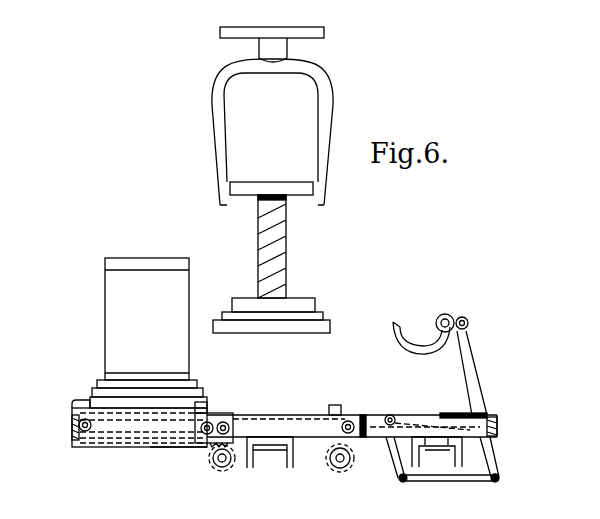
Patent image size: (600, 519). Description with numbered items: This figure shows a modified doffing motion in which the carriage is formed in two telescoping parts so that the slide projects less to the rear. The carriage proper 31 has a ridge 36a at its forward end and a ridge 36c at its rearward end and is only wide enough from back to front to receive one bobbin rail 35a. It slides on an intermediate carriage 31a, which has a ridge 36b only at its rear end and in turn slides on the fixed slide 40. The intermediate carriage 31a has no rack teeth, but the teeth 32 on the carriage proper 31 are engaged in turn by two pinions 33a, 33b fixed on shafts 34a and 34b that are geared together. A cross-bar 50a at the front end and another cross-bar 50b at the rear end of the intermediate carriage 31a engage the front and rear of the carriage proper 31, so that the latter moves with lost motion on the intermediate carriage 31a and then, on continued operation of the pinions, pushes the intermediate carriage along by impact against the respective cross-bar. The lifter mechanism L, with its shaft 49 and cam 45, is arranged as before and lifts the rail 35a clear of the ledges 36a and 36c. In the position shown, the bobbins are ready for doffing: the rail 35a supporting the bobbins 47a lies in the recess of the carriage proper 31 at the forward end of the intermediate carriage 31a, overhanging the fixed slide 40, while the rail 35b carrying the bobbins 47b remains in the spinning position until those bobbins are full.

The bobbins 47a is at (137, 323).
The bobbins 47b is at (278, 248).
The bobbin rail 35a is at (147, 403).
The rail 35b is at (323, 327).
The ridge 36a is at (80, 402).
The ridge 36b is at (329, 410).
The ridge 36c is at (207, 405).
The carriage proper 31 is at (115, 425).
The intermediate carriage 31a is at (278, 432).
The teeth 32 is at (188, 448).
The pinion 33a is at (206, 450).
The pinion 33b is at (340, 470).
The shaft 34a is at (222, 466).
The shaft 34b is at (297, 460).
The fixed slide 40 is at (430, 416).
The cam 45 is at (413, 332).
The shaft 49 is at (448, 317).
The lifter mechanism L is at (470, 357).
The cross-bar 50a is at (85, 432).
The cross-bar 50b is at (381, 416).